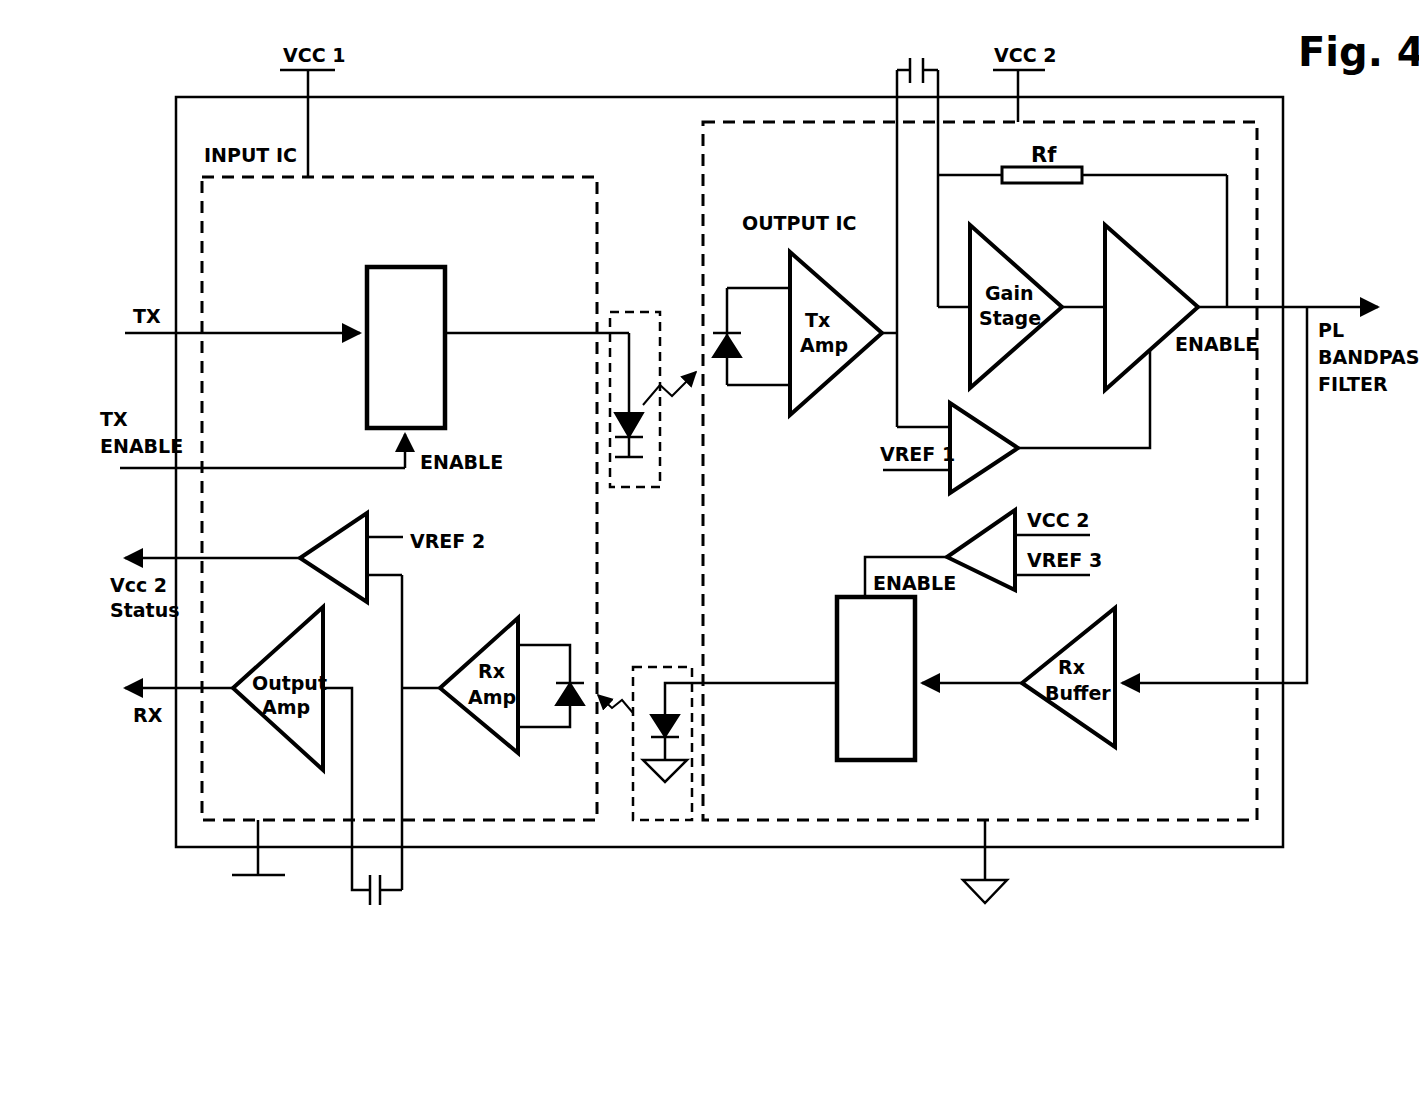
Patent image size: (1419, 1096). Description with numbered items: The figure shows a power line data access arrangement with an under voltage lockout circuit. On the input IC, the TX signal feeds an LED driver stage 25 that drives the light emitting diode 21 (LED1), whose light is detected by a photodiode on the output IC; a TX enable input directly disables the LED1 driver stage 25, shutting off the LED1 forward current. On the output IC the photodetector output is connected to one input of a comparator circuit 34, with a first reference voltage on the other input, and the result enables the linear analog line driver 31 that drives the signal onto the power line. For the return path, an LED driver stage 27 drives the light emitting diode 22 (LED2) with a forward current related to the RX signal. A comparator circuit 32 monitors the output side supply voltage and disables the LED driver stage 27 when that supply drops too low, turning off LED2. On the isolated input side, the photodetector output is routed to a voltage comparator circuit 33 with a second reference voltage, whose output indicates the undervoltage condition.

The light emitting diode 21 is at (628, 487).
The light emitting diode 22 is at (632, 793).
The LED1 driver stage 25 is at (405, 267).
The LED driver stage 27 is at (915, 722).
The linear analog line driver 31 is at (1152, 265).
The comparator circuit 32 is at (970, 541).
The voltage comparator circuit 33 is at (333, 531).
The comparator circuit 34 is at (986, 470).